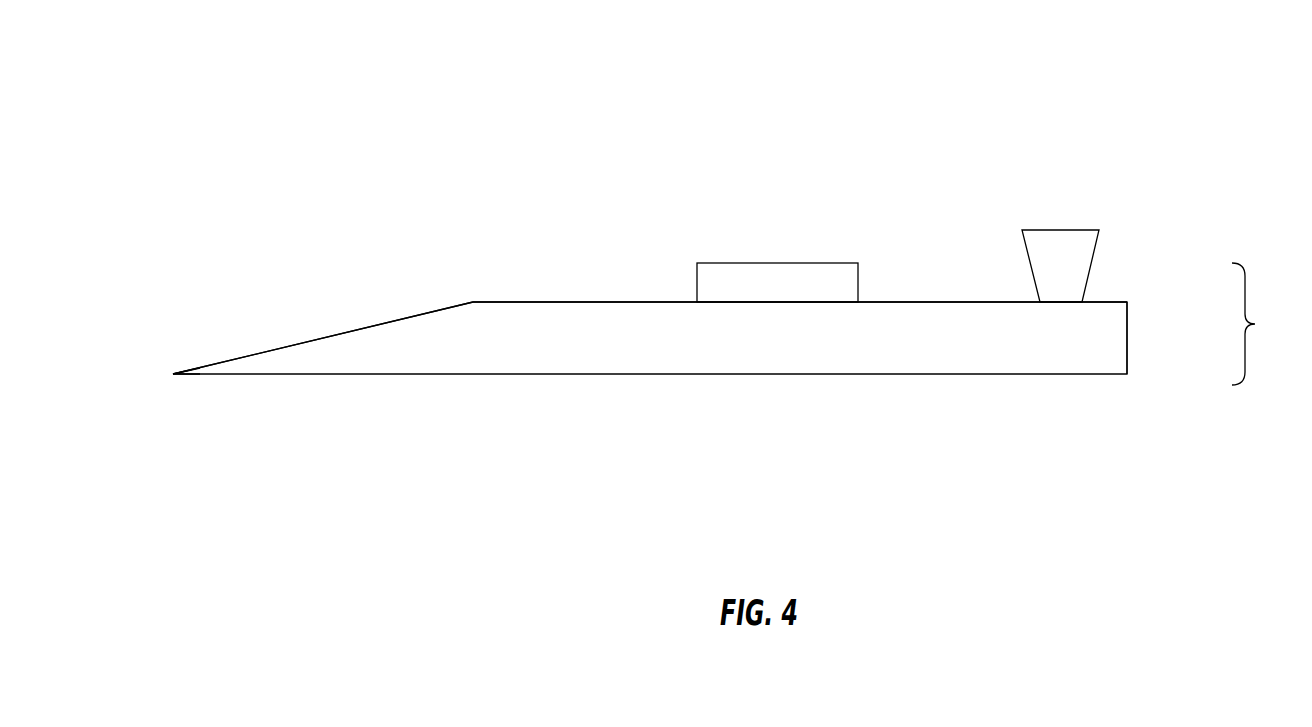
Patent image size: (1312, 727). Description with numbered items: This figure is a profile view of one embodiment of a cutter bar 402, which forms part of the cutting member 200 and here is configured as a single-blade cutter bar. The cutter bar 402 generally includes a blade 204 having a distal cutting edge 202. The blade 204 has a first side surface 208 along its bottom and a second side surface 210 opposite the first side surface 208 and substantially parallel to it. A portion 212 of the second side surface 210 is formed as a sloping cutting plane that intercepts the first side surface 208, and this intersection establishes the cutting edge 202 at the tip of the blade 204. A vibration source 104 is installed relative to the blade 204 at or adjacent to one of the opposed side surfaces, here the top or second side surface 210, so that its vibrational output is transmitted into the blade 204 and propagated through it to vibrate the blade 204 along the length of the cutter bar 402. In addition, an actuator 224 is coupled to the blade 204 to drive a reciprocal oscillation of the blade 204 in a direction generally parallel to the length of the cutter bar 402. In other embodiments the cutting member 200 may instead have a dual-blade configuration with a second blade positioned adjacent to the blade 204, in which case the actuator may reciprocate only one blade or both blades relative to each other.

The cutting member 200 is at (1108, 112).
The distal cutting edge 202 is at (163, 374).
The blade 204 is at (1117, 310).
The first side surface 208 is at (900, 375).
The second side surface 210 is at (893, 302).
The portion of the second side surface 212 is at (407, 316).
The actuator 224 is at (774, 263).
The vibration source 104 is at (1085, 227).
The cutter bar 402 is at (1262, 324).